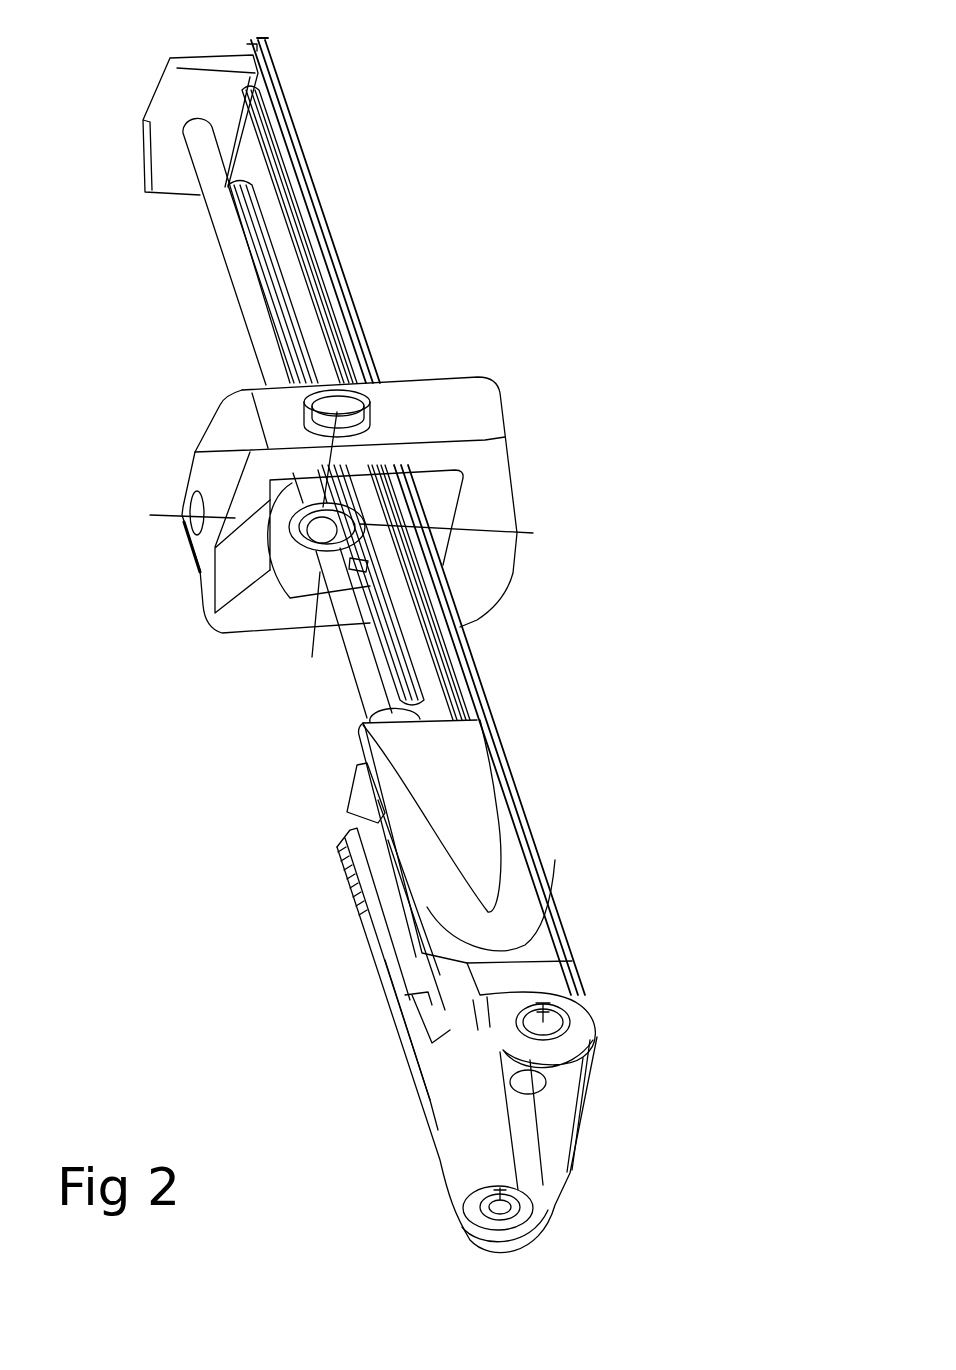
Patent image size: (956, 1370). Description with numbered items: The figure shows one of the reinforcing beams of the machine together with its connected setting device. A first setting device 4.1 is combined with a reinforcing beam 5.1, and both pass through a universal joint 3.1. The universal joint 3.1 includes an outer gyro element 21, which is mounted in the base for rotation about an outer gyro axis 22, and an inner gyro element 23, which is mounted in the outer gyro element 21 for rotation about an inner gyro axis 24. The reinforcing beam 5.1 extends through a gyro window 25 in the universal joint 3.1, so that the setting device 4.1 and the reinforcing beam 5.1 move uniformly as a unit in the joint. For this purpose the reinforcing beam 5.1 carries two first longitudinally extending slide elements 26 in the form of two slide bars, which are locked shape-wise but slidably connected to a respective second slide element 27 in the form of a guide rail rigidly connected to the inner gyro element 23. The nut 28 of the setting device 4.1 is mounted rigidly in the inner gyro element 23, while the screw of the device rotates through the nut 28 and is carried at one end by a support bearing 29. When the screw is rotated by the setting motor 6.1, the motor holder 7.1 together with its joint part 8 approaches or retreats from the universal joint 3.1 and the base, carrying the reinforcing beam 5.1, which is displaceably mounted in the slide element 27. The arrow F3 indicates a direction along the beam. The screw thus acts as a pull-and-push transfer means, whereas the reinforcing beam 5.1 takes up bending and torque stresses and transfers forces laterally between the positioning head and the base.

The universal joint 3.1 is at (601, 347).
The first setting device 4.1 is at (227, 235).
The reinforcing beam 5.1 is at (495, 830).
The setting motor 6.1 is at (393, 913).
The motor holder 7.1 is at (483, 853).
The joint part 8 is at (580, 1010).
The outer gyro element 21 is at (395, 496).
The outer gyro axis 22 is at (533, 533).
The inner gyro element 23 is at (305, 578).
The inner gyro axis 24 is at (307, 677).
The gyro window 25 is at (421, 474).
The first slide elements 26 is at (263, 262).
The second slide element 27 is at (372, 478).
The nut 28 is at (282, 575).
The support bearing 29 is at (170, 170).
The guide rail / force direction F3 is at (356, 275).